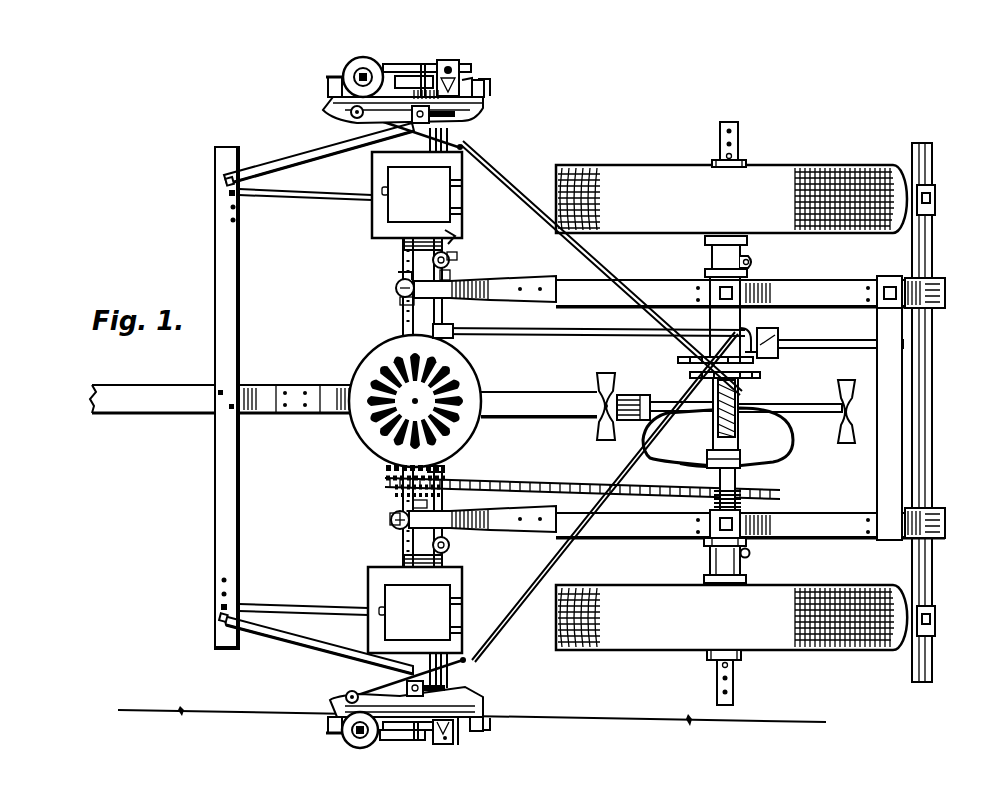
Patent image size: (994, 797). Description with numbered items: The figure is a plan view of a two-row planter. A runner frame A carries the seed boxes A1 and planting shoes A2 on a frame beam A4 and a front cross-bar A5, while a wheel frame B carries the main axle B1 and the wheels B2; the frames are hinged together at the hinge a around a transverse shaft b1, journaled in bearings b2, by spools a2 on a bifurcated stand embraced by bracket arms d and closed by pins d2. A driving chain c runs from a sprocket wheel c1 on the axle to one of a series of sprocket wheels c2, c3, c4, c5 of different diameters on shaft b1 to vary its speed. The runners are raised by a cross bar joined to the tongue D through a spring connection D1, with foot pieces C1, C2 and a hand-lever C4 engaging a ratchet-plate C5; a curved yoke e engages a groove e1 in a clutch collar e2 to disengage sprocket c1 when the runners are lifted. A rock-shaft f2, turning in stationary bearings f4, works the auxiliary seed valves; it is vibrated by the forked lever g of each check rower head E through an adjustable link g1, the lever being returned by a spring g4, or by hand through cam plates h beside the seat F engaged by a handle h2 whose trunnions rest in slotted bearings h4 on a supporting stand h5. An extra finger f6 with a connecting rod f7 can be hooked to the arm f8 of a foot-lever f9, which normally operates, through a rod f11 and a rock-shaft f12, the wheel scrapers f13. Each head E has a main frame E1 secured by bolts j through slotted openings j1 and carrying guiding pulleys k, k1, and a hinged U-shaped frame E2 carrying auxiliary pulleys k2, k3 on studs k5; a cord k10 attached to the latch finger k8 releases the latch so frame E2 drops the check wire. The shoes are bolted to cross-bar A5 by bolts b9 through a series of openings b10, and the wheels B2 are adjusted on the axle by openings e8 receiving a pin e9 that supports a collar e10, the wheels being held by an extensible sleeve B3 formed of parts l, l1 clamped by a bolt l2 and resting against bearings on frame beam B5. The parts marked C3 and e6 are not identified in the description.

The runner frame A is at (413, 128).
The seed box A1 is at (415, 402).
The planting shoe A2 is at (340, 194).
The frame beam A4 is at (409, 408).
The cross-bar A5 is at (234, 254).
The wheel frame B is at (920, 368).
The main axle B1 is at (741, 132).
The wheel B2 is at (731, 407).
The extensible sleeve B3 is at (712, 257).
The frame beam B5 is at (750, 292).
The foot piece C1 is at (604, 383).
The foot piece C2 is at (843, 385).
The ratchet plate C3 is at (683, 357).
The hand-lever C4 is at (740, 360).
The ratchet-plate C5 is at (760, 375).
The tongue D is at (539, 404).
The spring connection D1 is at (633, 392).
The check rower head E is at (478, 758).
The main frame E1 is at (352, 118).
The U-shaped frame E2 is at (413, 72).
The seat F is at (415, 401).
The hinged connection a is at (392, 519).
The sleeve or spool a2 is at (402, 297).
The transverse shaft b1 is at (412, 263).
The bearing b2 is at (404, 245).
The bolt b9 is at (229, 194).
The openings b10 is at (231, 221).
The driving chain c is at (582, 479).
The sprocket wheel c1 is at (720, 483).
The sprocket wheel c2 is at (388, 470).
The sprocket wheel c3 is at (393, 480).
The sprocket wheel c4 is at (400, 489).
The sprocket wheel c5 is at (400, 496).
The bracket arm d is at (455, 294).
The pin or bolt d2 is at (450, 275).
The curved yoke or cam piece e is at (778, 456).
The peripheral groove e1 is at (748, 467).
The clutch collar e2 is at (740, 450).
The threaded section e6 is at (742, 507).
The openings e8 is at (725, 143).
The pin or cotter e9 is at (717, 157).
The collar e10 is at (745, 160).
The rock-shaft f2 is at (440, 470).
The stationary bearing f4 is at (455, 257).
The projecting finger f6 is at (453, 338).
The connecting rod f7 is at (558, 330).
The projecting arm f8 is at (748, 332).
The foot-lever f9 is at (760, 342).
The rod f11 is at (840, 333).
The rock-shaft f12 is at (903, 393).
The scraper f13 is at (908, 188).
The forked vibrating lever g is at (353, 763).
The adjustable connecting link g1 is at (425, 87).
The spring g4 is at (440, 62).
The vibrating cam plate h is at (449, 543).
The handle h2 is at (449, 258).
The slotted bearing h4 is at (457, 233).
The supporting stand h5 is at (405, 277).
The connecting bolt j is at (430, 127).
The slotted opening j1 is at (455, 115).
The guiding pulley k is at (484, 82).
The guiding pulley k1 is at (484, 92).
The auxiliary pulley k2 is at (468, 79).
The auxiliary pulley k3 is at (372, 62).
The stud or finger k5 is at (456, 74).
The projecting finger k8 is at (350, 113).
The cord k10 is at (472, 156).
The sleeve part l is at (714, 560).
The sleeve part l1 is at (712, 542).
The clamping bolt l2 is at (750, 553).